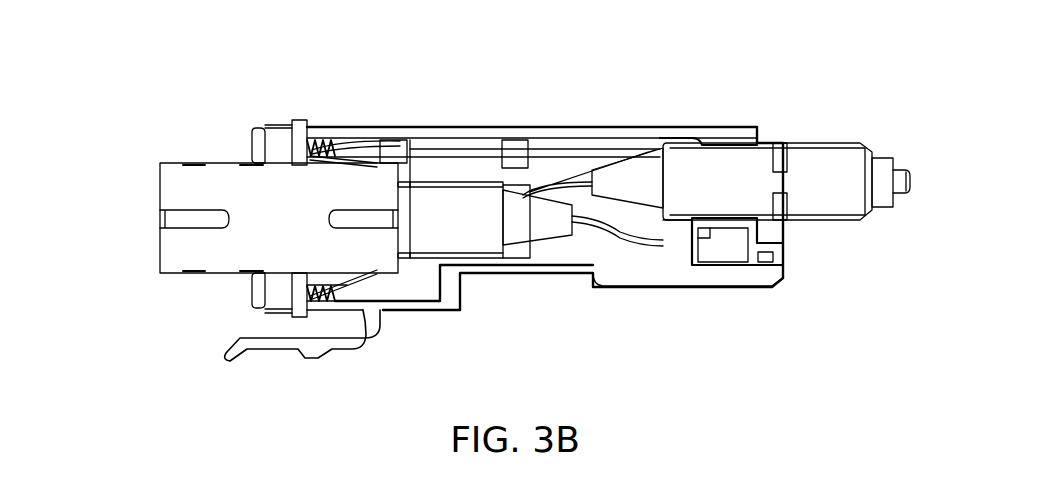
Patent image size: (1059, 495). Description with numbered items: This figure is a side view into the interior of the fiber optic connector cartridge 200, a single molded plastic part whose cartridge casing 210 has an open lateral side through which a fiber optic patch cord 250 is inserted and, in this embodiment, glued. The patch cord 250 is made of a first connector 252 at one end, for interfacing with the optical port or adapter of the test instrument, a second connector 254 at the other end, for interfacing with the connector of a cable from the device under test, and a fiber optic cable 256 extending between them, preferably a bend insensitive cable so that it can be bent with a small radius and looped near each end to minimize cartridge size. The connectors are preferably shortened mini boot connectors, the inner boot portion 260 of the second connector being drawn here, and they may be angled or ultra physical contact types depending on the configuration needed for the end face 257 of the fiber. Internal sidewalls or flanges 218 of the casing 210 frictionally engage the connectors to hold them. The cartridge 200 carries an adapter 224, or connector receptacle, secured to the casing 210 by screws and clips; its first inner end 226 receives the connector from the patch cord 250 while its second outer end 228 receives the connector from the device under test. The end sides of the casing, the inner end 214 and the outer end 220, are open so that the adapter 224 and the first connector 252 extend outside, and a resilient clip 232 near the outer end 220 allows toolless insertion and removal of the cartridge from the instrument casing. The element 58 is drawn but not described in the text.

The ferrule boot 58 is at (552, 228).
The fiber optic connector cartridge 200 is at (664, 323).
The cartridge casing 210 is at (391, 118).
The inner end 214 is at (797, 266).
The internal sidewalls and/or flanges 218 is at (733, 227).
The outer end 220 is at (213, 303).
The adapter 224 is at (255, 213).
The first (inner) end 226 is at (368, 237).
The second (outer) end 228 is at (150, 220).
The resilient clip 232 is at (278, 343).
The fiber optic patch cord 250 is at (588, 161).
The first connector 252 is at (845, 200).
The second connector 254 is at (462, 205).
The fiber optic cable 256 is at (528, 213).
The end face 257 is at (921, 170).
The boot portion 260 is at (640, 195).